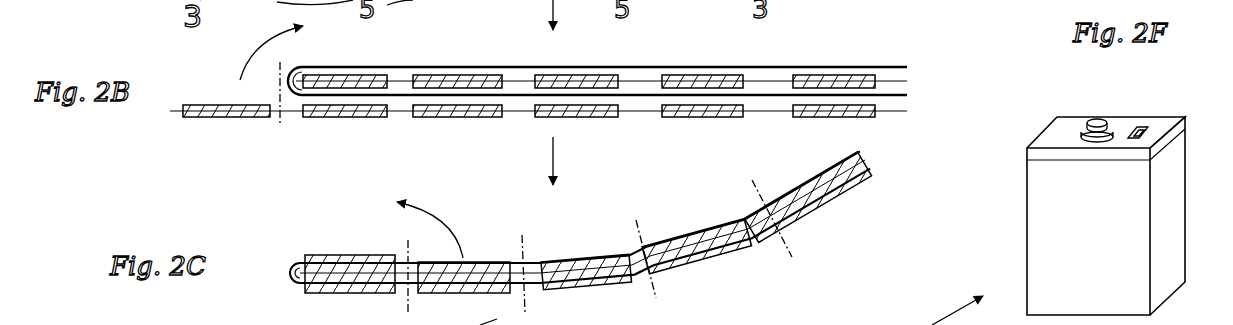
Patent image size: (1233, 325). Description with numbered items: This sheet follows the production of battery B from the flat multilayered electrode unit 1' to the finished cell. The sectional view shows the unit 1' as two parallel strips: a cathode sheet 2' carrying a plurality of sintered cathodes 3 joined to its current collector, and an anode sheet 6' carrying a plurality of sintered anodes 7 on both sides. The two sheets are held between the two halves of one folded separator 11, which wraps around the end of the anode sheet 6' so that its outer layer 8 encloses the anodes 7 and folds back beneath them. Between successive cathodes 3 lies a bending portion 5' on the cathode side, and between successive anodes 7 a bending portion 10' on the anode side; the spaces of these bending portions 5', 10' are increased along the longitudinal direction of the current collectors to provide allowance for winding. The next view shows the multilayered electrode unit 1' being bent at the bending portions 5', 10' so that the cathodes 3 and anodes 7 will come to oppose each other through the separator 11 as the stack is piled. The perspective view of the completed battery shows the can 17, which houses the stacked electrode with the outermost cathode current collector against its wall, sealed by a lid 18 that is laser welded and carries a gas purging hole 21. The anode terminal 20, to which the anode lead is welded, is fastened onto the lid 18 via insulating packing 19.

In FIG. 2B, the multilayered electrode unit 1' is at (618, 92).
In FIG. 2C, the multilayered electrode unit 1' is at (622, 209).
In FIG. 2B, the cathode sheet 2' is at (594, 131).
In FIG. 2B, the cathodes 3 is at (356, 118).
In FIG. 2B, the bending portion on the cathode side 5' is at (580, 135).
In FIG. 2B, the anode sheet 6' is at (653, 65).
In FIG. 2B, the anodes 7 is at (380, 86).
In FIG. 2B, the separator sheath 8 is at (889, 78).
In FIG. 2B, the bending portion on the anode side 10' is at (601, 53).
In FIG. 2B, the separator 11 is at (301, 73).
In FIG. 2F, the can 17 is at (1022, 315).
In FIG. 2F, the lid 18 is at (1160, 152).
In FIG. 2F, the insulating packing 19 is at (1113, 127).
In FIG. 2F, the anode terminal 20 is at (1102, 121).
In FIG. 2F, the gas purging hole 21 is at (1145, 132).